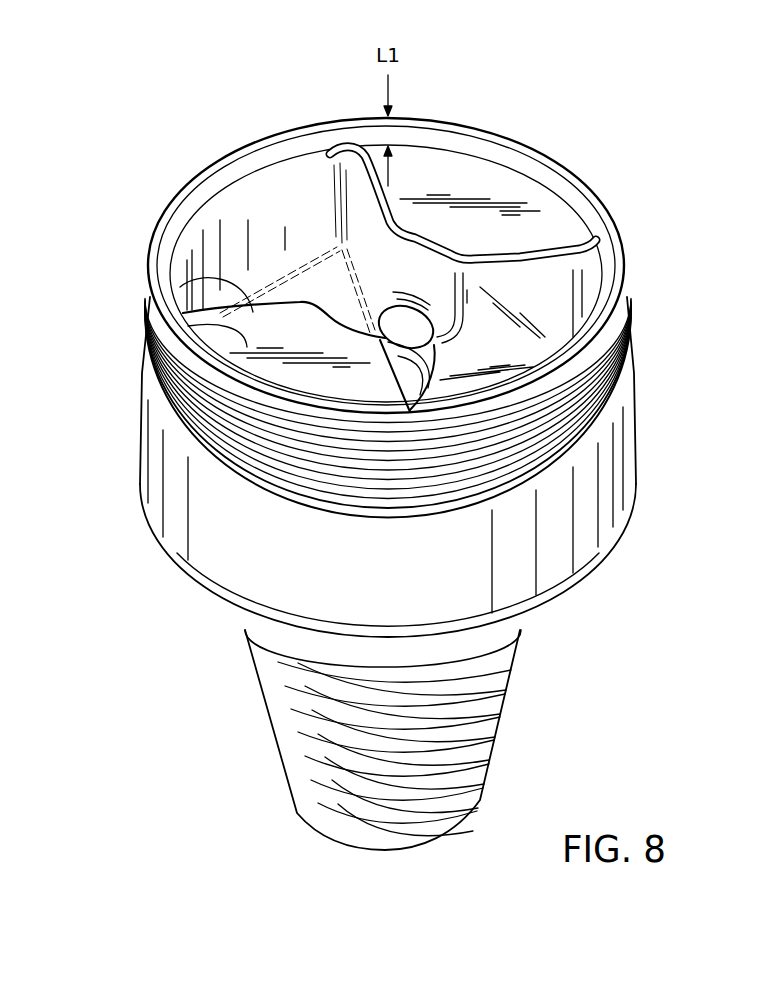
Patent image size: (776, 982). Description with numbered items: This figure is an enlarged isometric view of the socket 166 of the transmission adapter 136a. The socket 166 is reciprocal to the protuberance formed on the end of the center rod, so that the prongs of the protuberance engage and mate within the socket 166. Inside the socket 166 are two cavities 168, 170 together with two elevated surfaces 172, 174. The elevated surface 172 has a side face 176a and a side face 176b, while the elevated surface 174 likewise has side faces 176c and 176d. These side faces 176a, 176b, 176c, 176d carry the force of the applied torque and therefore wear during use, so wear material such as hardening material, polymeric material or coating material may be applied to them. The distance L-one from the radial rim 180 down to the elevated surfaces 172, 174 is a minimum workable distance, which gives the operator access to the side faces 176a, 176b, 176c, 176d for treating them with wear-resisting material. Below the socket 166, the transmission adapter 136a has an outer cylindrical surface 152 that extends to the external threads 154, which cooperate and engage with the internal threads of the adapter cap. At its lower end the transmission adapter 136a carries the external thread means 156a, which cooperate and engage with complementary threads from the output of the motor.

The elevated surface 172 is at (455, 175).
The radial rim 180 is at (562, 172).
The side face 176a is at (367, 220).
The socket 166 is at (236, 223).
The cavity 170 is at (210, 262).
The side face 176c is at (250, 281).
The elevated surface 174 is at (255, 322).
The outer cylindrical surface 152 is at (157, 425).
The side face 176b is at (535, 298).
The external threads 154 is at (623, 347).
The cavity 168 is at (523, 290).
The side face 176d is at (413, 390).
The transmission adapter 136a is at (565, 540).
The external thread means 156a is at (482, 722).